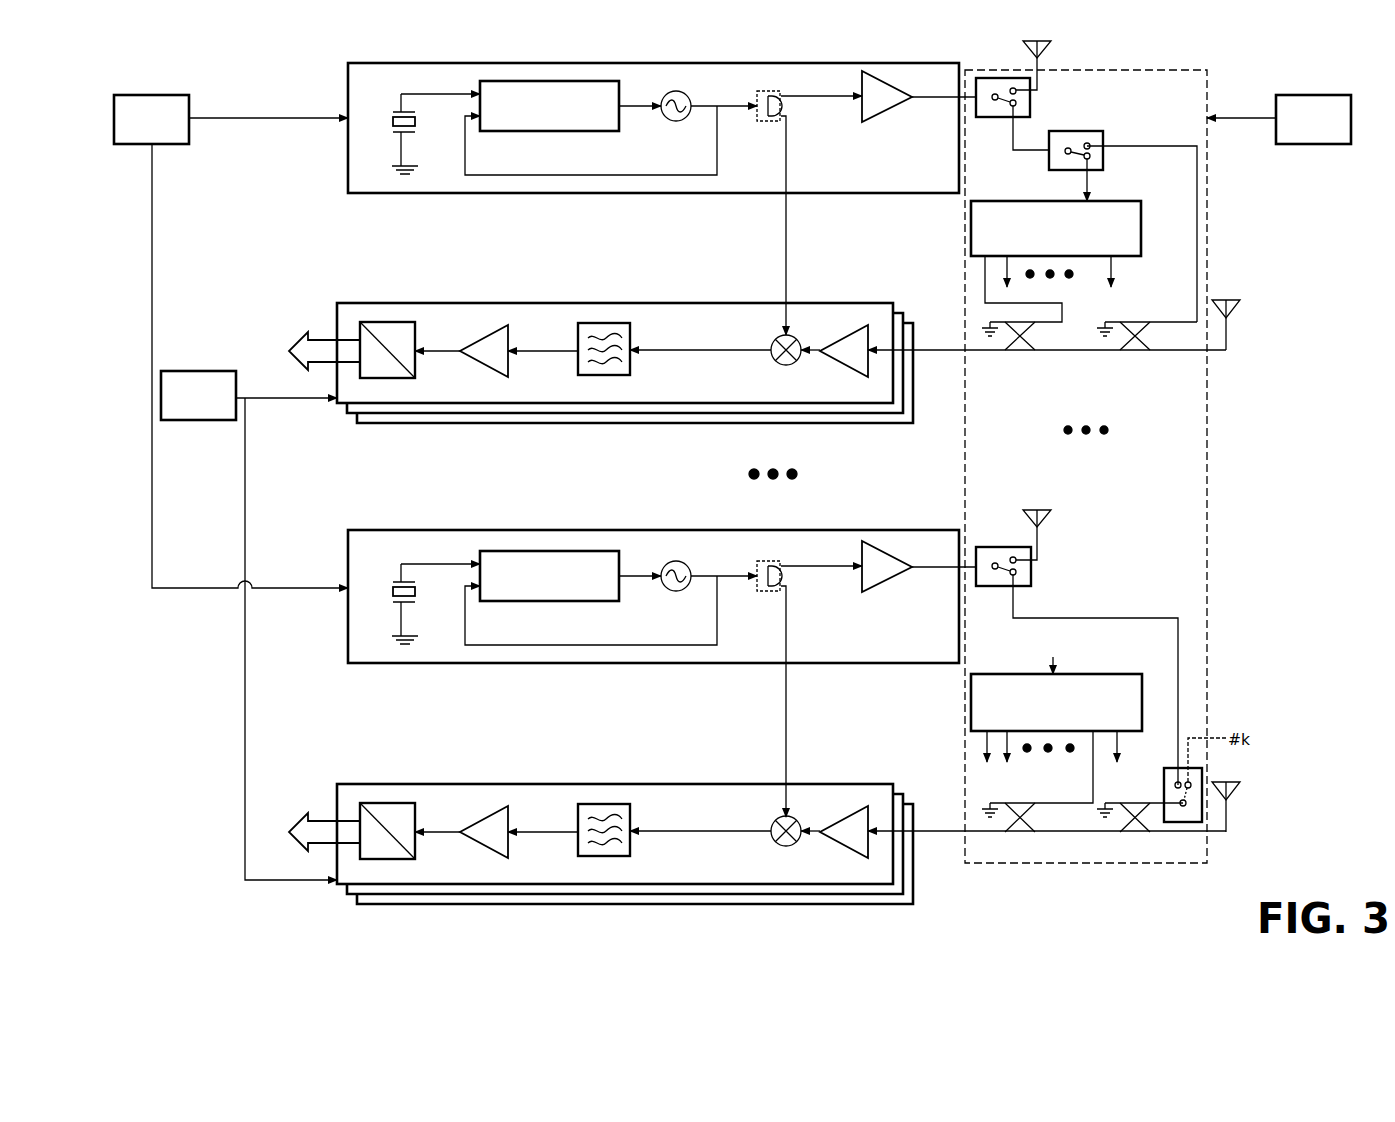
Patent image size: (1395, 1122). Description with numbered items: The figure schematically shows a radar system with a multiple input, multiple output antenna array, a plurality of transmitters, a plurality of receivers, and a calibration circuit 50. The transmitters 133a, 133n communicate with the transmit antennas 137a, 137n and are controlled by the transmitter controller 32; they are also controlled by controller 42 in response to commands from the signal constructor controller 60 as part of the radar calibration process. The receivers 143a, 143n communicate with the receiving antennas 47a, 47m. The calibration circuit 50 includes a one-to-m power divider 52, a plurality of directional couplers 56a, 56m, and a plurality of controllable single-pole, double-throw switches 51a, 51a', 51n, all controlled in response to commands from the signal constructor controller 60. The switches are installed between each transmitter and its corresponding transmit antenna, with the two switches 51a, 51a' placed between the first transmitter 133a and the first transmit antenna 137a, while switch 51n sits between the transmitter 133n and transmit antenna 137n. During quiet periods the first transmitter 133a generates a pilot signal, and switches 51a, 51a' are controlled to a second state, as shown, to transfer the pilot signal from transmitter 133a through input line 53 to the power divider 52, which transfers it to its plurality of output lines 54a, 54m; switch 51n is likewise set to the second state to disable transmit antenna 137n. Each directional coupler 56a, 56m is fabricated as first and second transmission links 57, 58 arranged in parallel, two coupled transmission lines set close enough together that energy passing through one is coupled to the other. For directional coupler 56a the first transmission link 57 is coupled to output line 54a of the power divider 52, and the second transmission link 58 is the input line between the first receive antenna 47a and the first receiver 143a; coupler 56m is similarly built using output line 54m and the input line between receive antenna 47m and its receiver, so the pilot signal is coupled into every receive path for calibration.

The transmitter controller 32 is at (231, 341).
The controller 42 is at (249, 625).
The signal constructor controller 60 is at (805, 473).
The first transmitter 133a is at (348, 66).
The nth transmitter 133n is at (655, 530).
The first receiver 143a is at (525, 423).
The receiver 143n is at (448, 784).
The first transmit antenna 137a is at (1046, 52).
The nth transmit antenna 137n is at (1046, 520).
The first receive antenna 47a is at (1236, 310).
The mth receive antenna 47m is at (1236, 792).
The calibration circuit 50 is at (1207, 87).
The single-pole double-throw switch 51a is at (1092, 97).
The single-pole double-throw switch 51a' is at (1045, 153).
The single-pole double-throw switch 51n is at (1031, 578).
The 1-to-m power divider 52 is at (1141, 230).
The input line 53 is at (1160, 618).
The output line 54a is at (1128, 268).
The output line 54m is at (1128, 748).
The directional coupler 56a is at (1003, 340).
The directional coupler 56m is at (1003, 825).
The first transmission link 57 is at (1015, 322).
The second transmission link 58 is at (1018, 353).